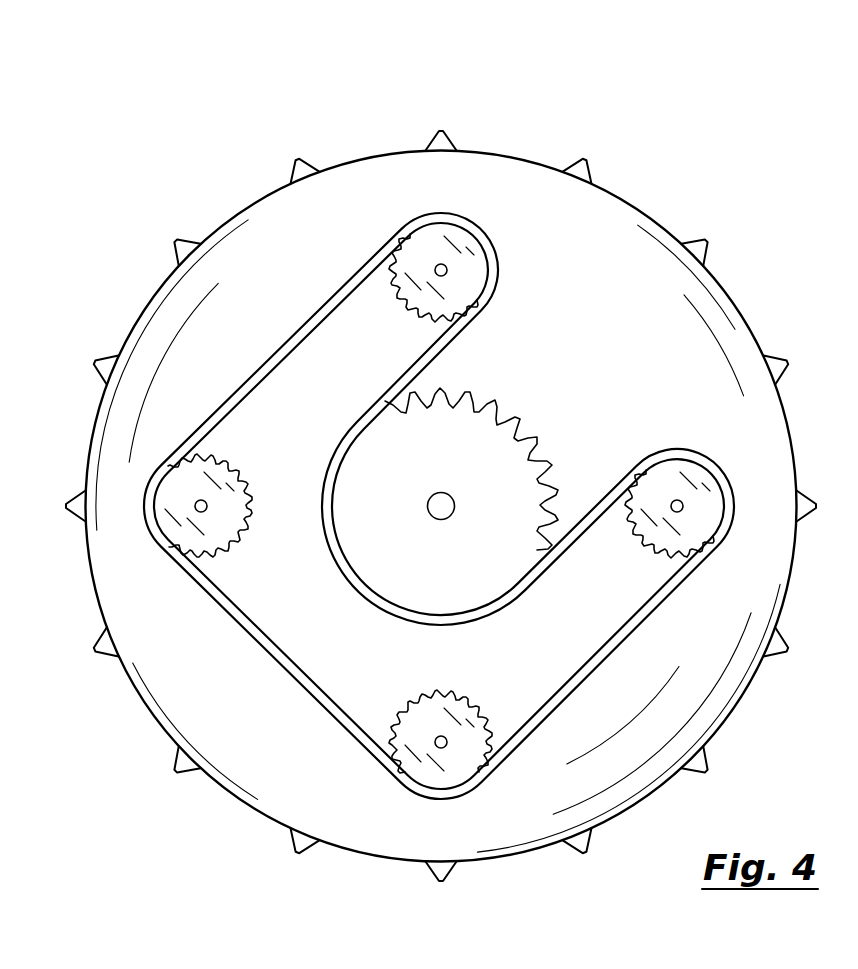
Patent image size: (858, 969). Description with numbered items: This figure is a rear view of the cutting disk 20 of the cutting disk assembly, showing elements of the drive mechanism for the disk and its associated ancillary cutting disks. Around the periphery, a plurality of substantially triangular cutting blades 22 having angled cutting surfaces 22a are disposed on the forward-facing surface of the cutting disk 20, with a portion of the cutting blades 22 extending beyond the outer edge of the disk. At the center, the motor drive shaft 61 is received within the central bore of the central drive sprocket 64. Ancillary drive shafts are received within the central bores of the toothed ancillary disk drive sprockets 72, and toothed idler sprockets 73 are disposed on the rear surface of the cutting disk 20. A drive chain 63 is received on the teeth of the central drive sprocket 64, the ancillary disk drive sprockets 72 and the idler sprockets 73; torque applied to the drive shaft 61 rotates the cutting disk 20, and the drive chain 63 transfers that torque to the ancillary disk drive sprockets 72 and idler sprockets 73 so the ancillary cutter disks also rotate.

The cutting disk 20 is at (631, 232).
The cutting blades 22 is at (441, 456).
The angled cutting surfaces 22a is at (427, 147).
The motor drive shaft 61 is at (455, 506).
The drive chain 63 is at (302, 682).
The central drive sprocket 64 is at (474, 448).
The ancillary disk drive sprockets 72 is at (188, 528).
The idler sprockets 73 is at (462, 243).